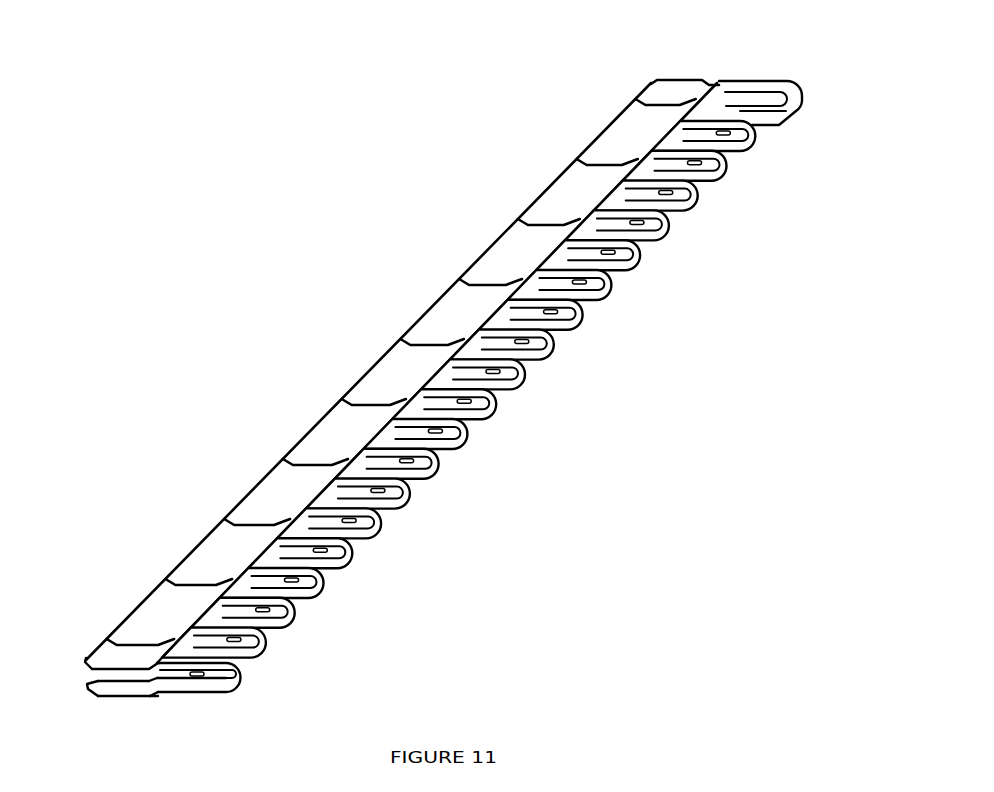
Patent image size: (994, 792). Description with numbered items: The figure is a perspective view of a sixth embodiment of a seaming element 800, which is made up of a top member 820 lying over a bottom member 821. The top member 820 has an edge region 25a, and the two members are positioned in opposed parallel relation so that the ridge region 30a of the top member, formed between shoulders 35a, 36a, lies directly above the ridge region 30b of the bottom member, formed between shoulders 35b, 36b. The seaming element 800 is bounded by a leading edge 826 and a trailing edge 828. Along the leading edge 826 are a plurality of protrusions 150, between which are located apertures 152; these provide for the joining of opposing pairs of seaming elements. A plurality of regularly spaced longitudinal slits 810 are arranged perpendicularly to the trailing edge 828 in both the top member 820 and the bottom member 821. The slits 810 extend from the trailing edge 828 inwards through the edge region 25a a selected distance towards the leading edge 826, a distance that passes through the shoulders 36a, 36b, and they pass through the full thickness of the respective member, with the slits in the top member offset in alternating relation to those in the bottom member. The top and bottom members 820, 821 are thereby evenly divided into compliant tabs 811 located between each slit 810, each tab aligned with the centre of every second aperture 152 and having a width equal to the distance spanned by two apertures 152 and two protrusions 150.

The seaming element 800 is at (283, 202).
The top member 820 is at (718, 88).
The bottom member 821 is at (165, 645).
The edge region 25a is at (660, 70).
The trailing edge 828 is at (537, 195).
The compliant tabs 811 is at (450, 316).
The longitudinal slits 810 is at (312, 462).
The leading edge 826 is at (458, 389).
The apertures 152 is at (483, 410).
The protrusions 150 is at (390, 517).
The shoulder 36a is at (158, 643).
The ridge region 30a is at (125, 655).
The shoulder 35a is at (87, 653).
The shoulder 36b is at (157, 692).
The ridge region 30b is at (125, 690).
The shoulder 35b is at (92, 690).